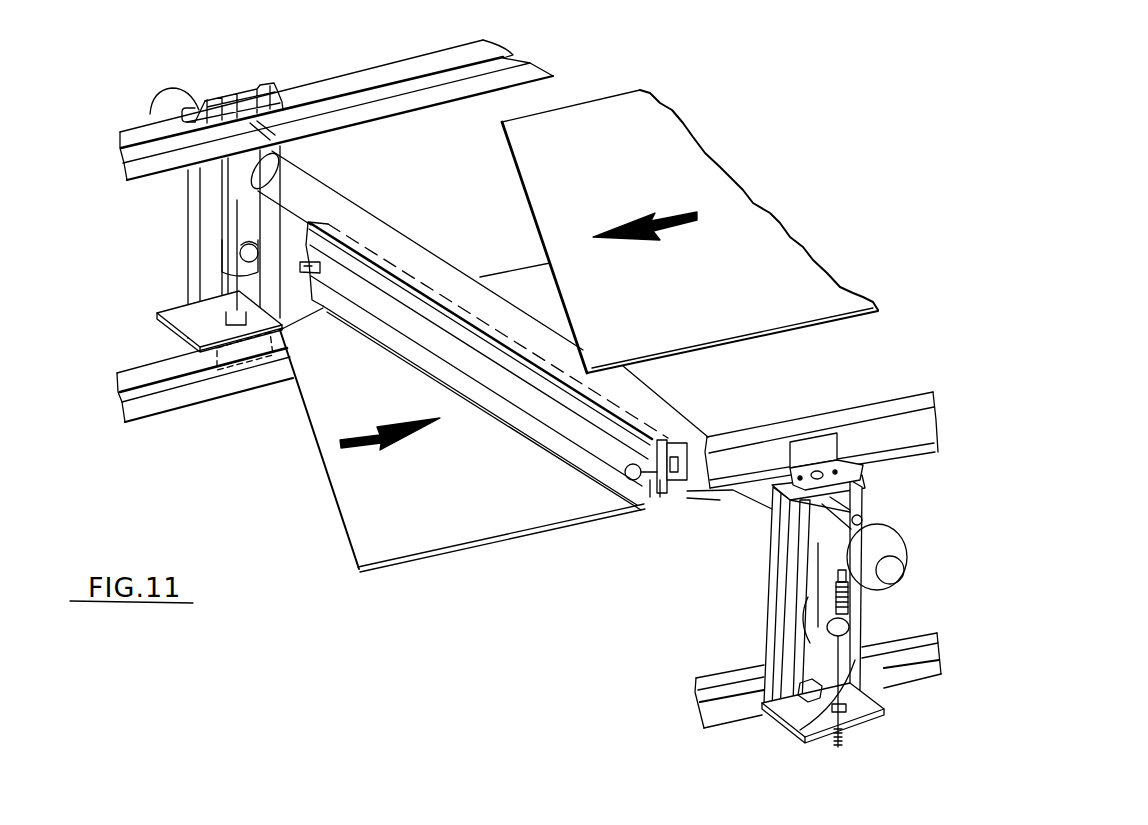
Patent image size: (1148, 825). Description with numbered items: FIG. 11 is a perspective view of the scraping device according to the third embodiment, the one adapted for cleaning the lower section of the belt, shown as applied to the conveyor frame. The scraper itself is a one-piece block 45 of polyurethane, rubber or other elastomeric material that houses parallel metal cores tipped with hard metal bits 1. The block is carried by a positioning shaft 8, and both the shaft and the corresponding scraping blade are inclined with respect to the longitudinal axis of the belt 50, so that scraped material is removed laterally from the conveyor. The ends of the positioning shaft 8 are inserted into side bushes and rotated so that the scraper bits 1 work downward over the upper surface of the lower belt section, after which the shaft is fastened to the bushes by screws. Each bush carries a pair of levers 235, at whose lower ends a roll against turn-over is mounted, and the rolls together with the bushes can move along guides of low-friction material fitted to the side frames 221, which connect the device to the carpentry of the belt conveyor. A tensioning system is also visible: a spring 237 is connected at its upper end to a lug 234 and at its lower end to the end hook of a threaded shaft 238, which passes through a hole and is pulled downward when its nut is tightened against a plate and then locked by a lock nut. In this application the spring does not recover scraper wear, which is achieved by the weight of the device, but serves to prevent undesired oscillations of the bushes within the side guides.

The hard metal bits 1 is at (492, 418).
The positioning shaft 8 is at (307, 193).
The block 45 is at (663, 508).
The belt 50 is at (570, 143).
The side frames 221 is at (193, 247).
The lug 234 is at (867, 582).
The levers 235 is at (247, 204).
The spring 237 is at (862, 628).
The threaded shaft 238 is at (800, 730).